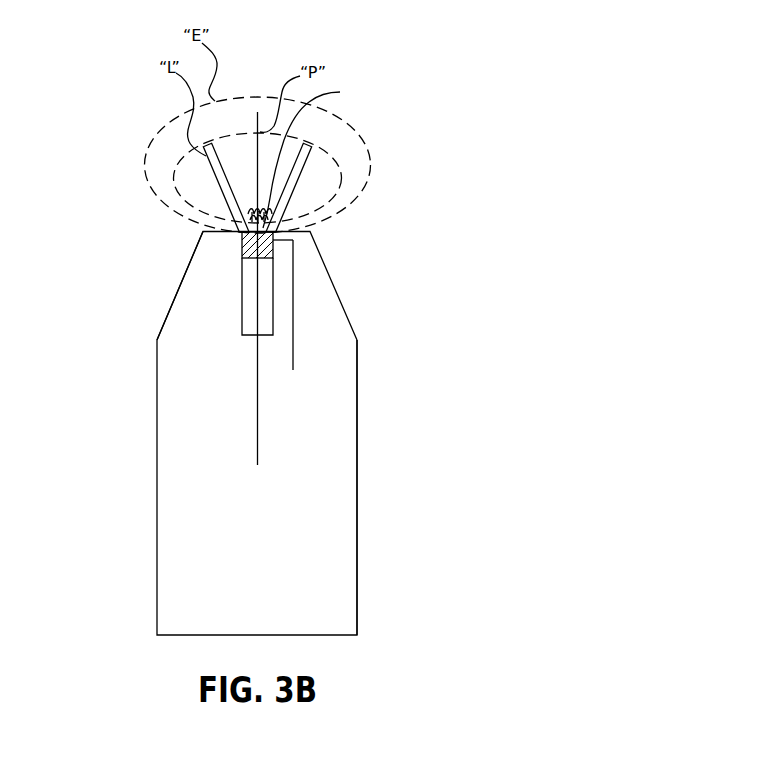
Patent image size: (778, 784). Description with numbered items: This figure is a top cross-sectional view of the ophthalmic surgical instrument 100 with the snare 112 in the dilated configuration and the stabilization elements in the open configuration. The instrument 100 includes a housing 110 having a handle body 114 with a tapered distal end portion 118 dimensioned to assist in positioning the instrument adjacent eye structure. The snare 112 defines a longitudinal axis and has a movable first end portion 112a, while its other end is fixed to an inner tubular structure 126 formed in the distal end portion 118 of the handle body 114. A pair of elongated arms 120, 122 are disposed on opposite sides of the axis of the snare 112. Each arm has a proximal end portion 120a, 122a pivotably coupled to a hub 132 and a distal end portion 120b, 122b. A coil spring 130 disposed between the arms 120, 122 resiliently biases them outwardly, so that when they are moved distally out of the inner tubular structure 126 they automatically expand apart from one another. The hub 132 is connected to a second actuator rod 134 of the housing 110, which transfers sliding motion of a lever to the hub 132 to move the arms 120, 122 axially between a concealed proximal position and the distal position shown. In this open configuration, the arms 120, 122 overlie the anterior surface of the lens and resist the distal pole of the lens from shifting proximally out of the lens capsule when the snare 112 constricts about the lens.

The ophthalmic surgical instrument 100 is at (99, 92).
The housing 110 is at (365, 563).
The snare 112 is at (257, 142).
The first end portion 112a is at (259, 392).
The handle body 114 is at (358, 510).
The tapered distal end portion 118 is at (348, 323).
The arm 120 is at (212, 185).
The proximal end portion 120a is at (239, 226).
The distal end portion 120b is at (211, 153).
The arm 122 is at (306, 177).
The proximal end portion 122a is at (278, 226).
The distal end portion 122b is at (306, 145).
The inner tubular structure 126 is at (283, 240).
The coil spring 130 is at (311, 155).
The hub 132 is at (241, 256).
The second actuator rod 134 is at (296, 290).